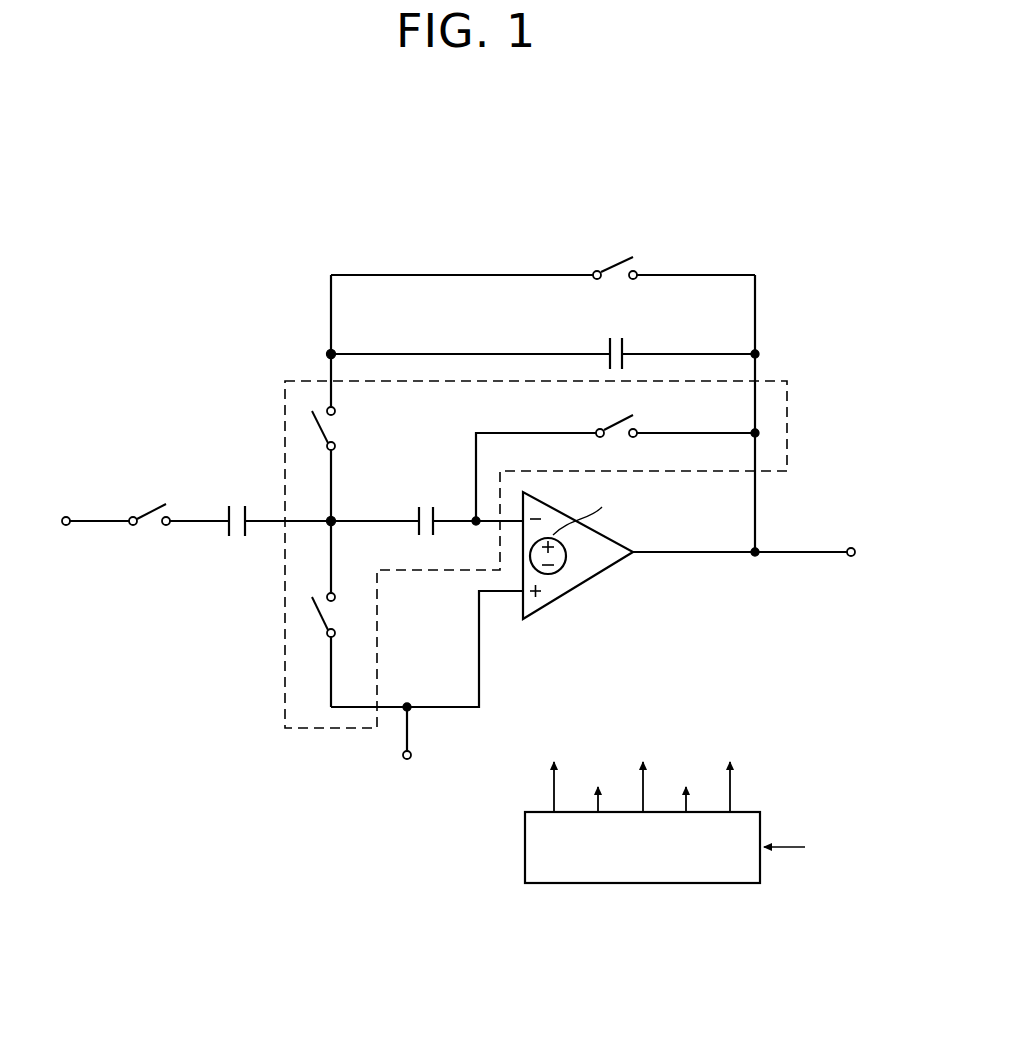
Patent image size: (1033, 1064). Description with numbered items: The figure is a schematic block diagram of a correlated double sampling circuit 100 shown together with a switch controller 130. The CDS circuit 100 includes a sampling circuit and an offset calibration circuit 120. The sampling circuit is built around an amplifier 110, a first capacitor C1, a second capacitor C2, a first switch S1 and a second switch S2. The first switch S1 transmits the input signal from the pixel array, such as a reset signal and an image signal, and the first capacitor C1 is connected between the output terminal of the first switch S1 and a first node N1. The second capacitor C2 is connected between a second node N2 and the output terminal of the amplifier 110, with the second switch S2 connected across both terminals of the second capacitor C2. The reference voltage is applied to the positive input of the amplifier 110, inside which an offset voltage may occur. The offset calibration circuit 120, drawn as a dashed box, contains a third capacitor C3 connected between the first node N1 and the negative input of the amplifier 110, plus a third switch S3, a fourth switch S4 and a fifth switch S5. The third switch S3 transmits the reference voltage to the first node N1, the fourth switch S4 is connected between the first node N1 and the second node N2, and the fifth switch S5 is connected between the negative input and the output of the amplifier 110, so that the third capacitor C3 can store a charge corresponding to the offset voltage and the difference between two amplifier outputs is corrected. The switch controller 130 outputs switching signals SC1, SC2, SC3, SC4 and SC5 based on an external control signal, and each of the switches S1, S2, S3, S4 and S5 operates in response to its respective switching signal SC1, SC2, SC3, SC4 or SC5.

The correlated double sampling circuit 100 is at (903, 152).
The amplifier 110 is at (580, 588).
The offset calibration circuit 120 is at (787, 421).
The switch controller 130 is at (645, 883).
The first switch S1 is at (149, 531).
The second switch S2 is at (615, 281).
The third switch S3 is at (340, 615).
The fourth switch S4 is at (339, 428).
The fifth switch S5 is at (616, 440).
The first capacitor C1 is at (238, 538).
The second capacitor C2 is at (617, 342).
The third capacitor C3 is at (426, 507).
The first node N1 is at (335, 518).
The second node N2 is at (334, 351).
The first switching signal SC1 is at (148, 504).
The second switching signal SC2 is at (614, 255).
The third switching signal SC3 is at (312, 614).
The fourth switching signal SC4 is at (312, 428).
The fifth switching signal SC5 is at (617, 388).